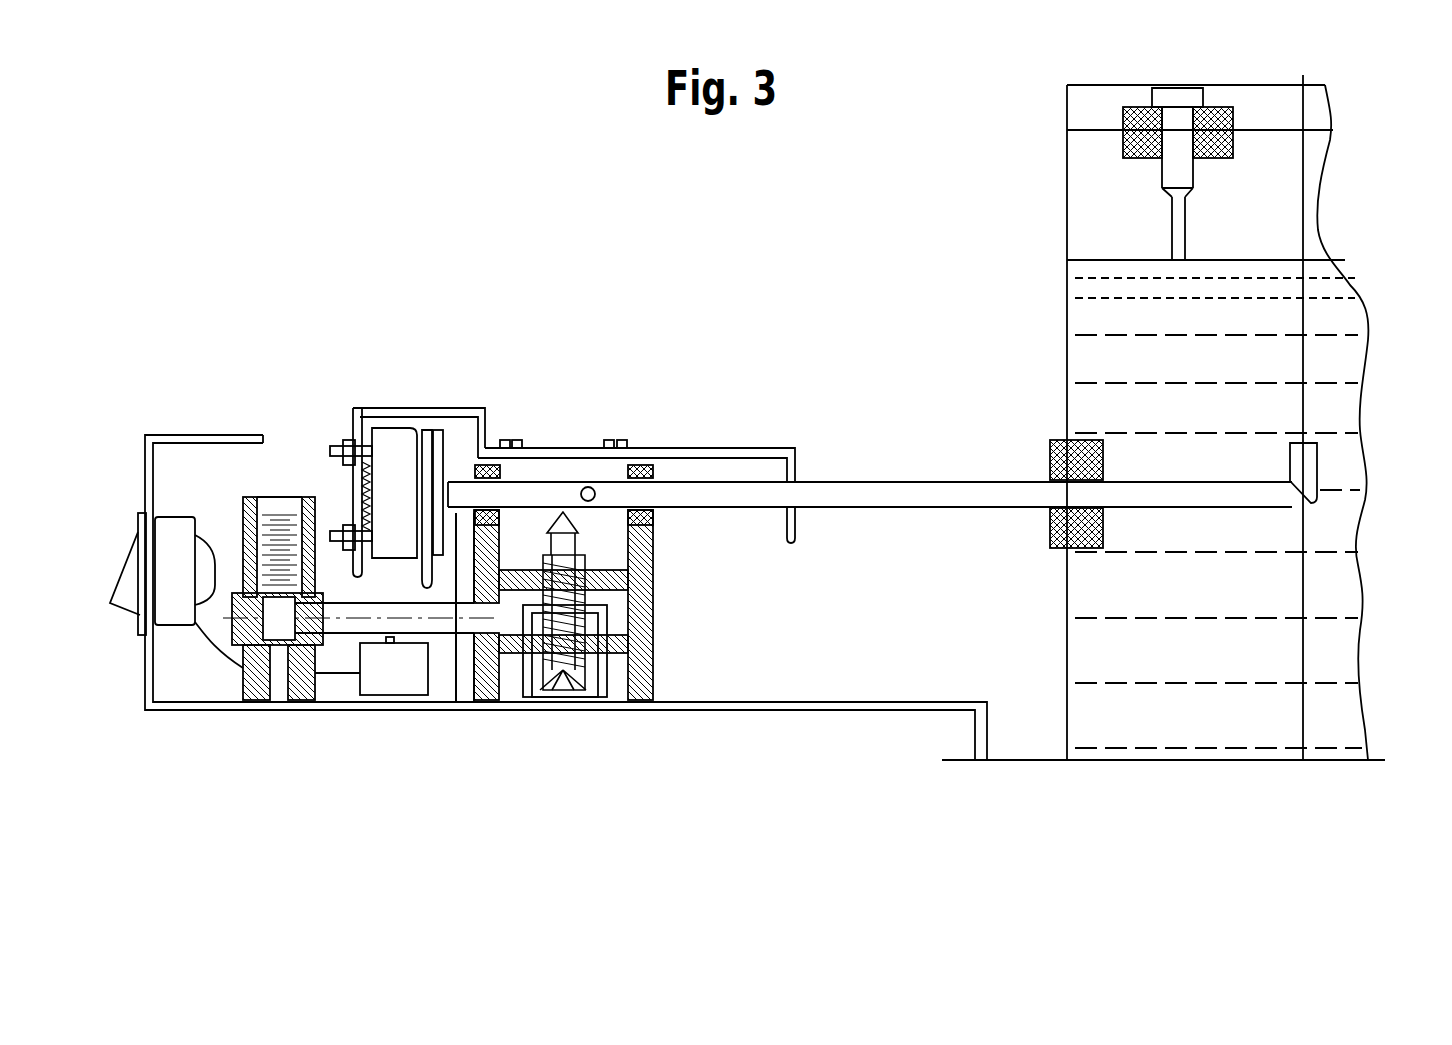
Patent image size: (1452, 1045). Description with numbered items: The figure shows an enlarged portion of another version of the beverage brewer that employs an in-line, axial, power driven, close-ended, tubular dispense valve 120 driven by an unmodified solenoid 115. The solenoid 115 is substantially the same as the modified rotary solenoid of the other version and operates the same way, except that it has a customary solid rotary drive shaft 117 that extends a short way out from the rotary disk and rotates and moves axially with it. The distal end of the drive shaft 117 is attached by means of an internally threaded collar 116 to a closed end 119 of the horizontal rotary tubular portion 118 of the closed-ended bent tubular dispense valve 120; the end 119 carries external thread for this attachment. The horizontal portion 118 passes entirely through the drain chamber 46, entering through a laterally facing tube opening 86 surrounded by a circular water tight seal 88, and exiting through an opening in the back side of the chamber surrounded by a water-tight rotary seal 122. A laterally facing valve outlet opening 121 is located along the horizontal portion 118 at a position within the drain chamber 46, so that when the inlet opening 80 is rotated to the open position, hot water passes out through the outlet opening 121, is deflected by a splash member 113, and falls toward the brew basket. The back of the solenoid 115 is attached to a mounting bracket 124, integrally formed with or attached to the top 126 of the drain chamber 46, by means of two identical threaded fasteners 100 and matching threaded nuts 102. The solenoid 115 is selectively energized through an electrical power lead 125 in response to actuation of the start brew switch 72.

The drain chamber 46 is at (655, 540).
The start brew switch 72 is at (130, 560).
The inlet opening 80 is at (1312, 443).
The tube opening 86 is at (1067, 498).
The water tight seal 88 is at (1050, 445).
The threaded fasteners 100 is at (345, 445).
The threaded nuts 102 is at (347, 527).
The splash member 113 is at (358, 695).
The unmodified solenoid 115 is at (385, 443).
The internally threaded collar 116 is at (472, 470).
The rotary drive shaft 117 is at (456, 703).
The horizontal rotary tubular portion 118 is at (848, 480).
The closed end 119 is at (588, 486).
The closed-ended bent tubular dispense valve 120 is at (1217, 508).
The valve outlet opening 121 is at (612, 442).
The water-tight rotary seal 122 is at (505, 440).
The mounting bracket 124 is at (420, 410).
The electrical power lead 125 is at (426, 582).
The top of drain chamber 126 is at (585, 448).